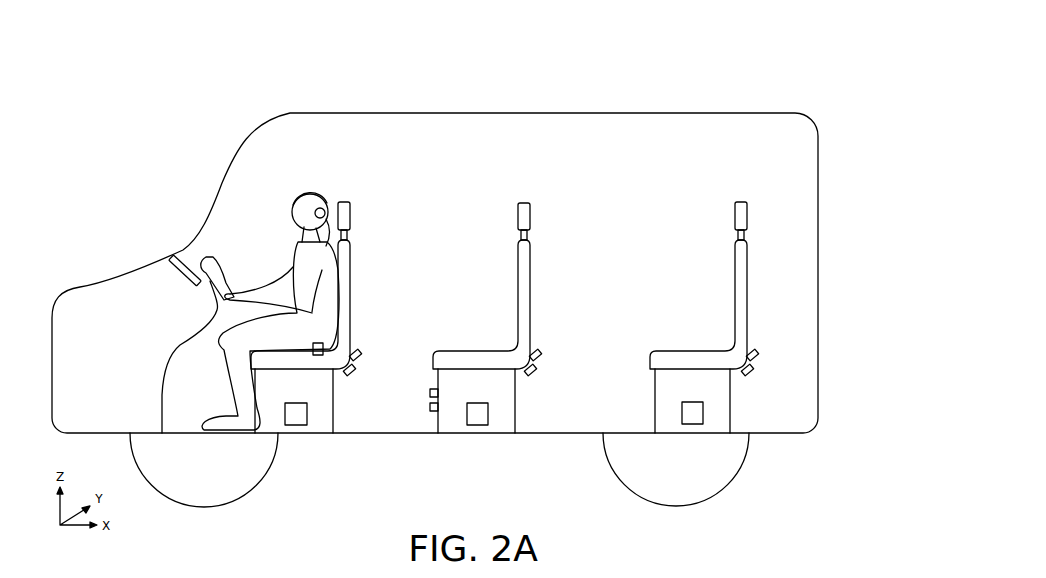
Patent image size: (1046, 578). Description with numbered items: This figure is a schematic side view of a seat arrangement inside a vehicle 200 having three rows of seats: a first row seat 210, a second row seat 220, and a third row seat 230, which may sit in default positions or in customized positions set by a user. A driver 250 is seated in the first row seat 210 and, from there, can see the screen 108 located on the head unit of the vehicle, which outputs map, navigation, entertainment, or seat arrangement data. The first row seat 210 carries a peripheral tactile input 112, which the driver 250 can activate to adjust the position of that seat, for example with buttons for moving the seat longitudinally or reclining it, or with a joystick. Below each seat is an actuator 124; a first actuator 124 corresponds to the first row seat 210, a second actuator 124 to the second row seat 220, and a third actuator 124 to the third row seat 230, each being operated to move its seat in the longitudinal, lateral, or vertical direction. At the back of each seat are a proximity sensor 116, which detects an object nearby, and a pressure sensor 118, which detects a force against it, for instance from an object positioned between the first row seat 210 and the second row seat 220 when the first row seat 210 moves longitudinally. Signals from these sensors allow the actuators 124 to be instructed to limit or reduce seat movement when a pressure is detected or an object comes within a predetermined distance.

The vehicle 200 is at (727, 82).
The screen 108 is at (174, 258).
The driver 250 is at (304, 194).
The first row seat 210 is at (347, 200).
The second row seat 220 is at (529, 201).
The third row seat 230 is at (744, 200).
The proximity sensor 116 is at (359, 351).
The pressure sensor 118 is at (351, 377).
The peripheral tactile input 112 is at (319, 355).
The actuator 124 is at (296, 426).